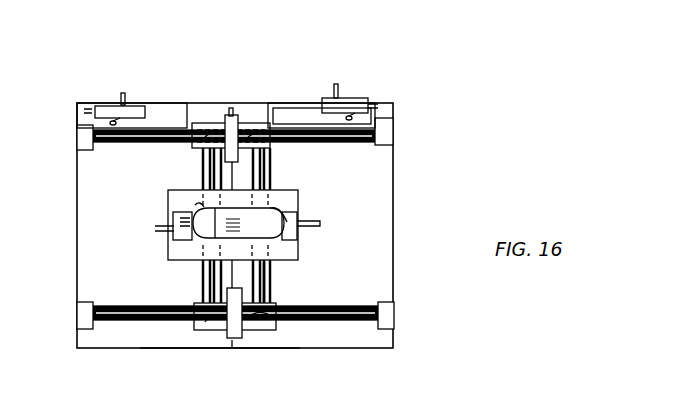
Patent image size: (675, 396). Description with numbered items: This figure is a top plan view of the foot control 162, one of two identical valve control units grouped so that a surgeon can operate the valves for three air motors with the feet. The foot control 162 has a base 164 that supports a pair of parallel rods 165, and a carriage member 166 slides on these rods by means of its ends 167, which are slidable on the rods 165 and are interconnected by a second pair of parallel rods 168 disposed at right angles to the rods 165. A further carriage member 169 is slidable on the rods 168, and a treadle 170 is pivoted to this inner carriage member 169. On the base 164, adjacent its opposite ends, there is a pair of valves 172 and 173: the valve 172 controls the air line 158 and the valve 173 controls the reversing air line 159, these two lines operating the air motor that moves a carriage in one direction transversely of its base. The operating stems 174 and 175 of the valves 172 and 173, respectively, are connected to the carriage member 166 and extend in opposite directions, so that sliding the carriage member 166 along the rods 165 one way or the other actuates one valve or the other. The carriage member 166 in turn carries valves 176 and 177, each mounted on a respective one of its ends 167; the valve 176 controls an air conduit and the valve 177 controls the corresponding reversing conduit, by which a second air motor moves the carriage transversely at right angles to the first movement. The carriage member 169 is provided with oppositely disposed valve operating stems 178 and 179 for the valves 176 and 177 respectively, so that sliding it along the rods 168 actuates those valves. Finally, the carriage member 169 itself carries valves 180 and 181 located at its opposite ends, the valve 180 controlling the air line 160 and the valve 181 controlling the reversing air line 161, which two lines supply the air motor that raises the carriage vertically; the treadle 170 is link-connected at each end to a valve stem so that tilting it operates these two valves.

The air line 158 is at (119, 97).
The reversing air line 159 is at (338, 85).
The air line 160 is at (160, 228).
The reversing air line 161 is at (318, 222).
The foot control 162 is at (216, 348).
The base 164 is at (88, 291).
The parallel rods 165 is at (358, 145).
The carriage member 166 is at (280, 283).
The ends 167 is at (252, 118).
The parallel rods 168 is at (272, 158).
The carriage member 169 is at (299, 250).
The treadle 170 is at (200, 211).
The valve 172 is at (137, 104).
The valve 173 is at (353, 99).
The operating stem 174 is at (167, 103).
The operating stem 175 is at (297, 102).
The valve 176 is at (226, 126).
The valve 177 is at (216, 328).
The valve operating stem 178 is at (203, 175).
The valve operating stem 179 is at (214, 272).
The valve 180 is at (170, 235).
The valve 181 is at (300, 236).